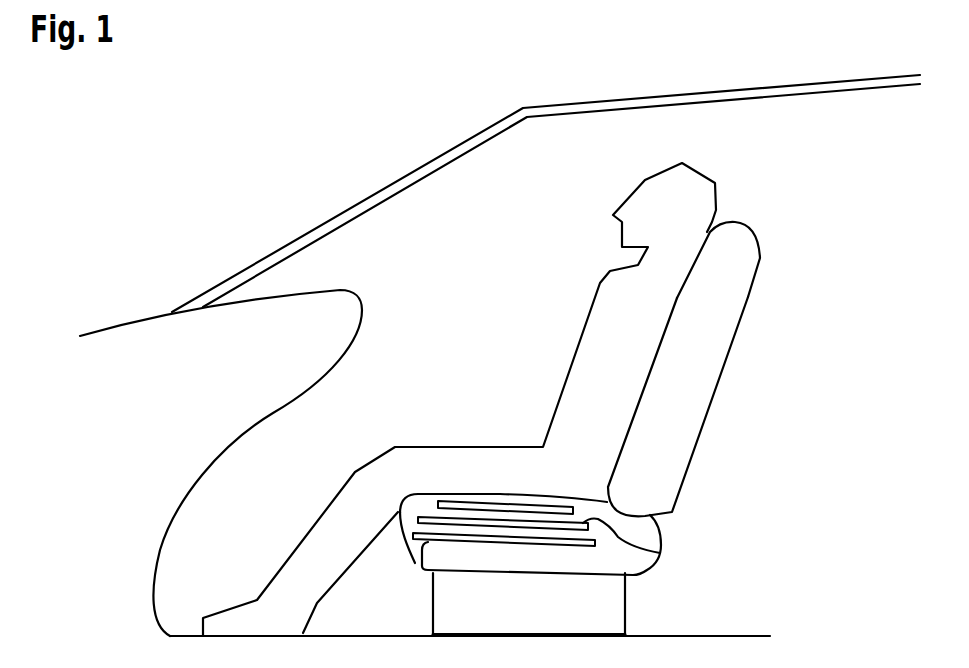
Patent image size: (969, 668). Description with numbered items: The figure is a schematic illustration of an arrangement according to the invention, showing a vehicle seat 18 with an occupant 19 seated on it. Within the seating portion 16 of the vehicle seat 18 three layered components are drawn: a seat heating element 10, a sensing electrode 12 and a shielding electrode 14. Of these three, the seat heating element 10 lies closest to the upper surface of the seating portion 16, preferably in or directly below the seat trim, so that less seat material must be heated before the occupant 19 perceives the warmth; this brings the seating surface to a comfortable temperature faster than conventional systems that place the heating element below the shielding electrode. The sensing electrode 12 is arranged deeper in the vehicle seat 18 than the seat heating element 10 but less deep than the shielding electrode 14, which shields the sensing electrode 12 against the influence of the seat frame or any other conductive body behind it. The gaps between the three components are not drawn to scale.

The seat heating element 10 is at (458, 506).
The sensing electrode 12 is at (655, 555).
The shielding electrode 14 is at (421, 573).
The seating portion 16 is at (665, 532).
The vehicle seat 18 is at (753, 298).
The occupant 19 is at (600, 283).